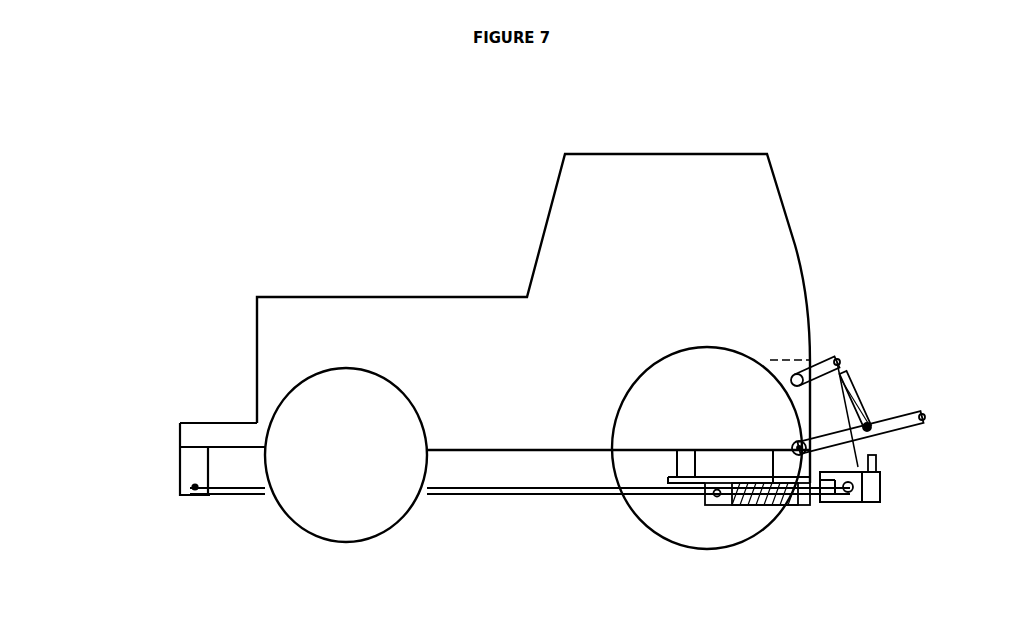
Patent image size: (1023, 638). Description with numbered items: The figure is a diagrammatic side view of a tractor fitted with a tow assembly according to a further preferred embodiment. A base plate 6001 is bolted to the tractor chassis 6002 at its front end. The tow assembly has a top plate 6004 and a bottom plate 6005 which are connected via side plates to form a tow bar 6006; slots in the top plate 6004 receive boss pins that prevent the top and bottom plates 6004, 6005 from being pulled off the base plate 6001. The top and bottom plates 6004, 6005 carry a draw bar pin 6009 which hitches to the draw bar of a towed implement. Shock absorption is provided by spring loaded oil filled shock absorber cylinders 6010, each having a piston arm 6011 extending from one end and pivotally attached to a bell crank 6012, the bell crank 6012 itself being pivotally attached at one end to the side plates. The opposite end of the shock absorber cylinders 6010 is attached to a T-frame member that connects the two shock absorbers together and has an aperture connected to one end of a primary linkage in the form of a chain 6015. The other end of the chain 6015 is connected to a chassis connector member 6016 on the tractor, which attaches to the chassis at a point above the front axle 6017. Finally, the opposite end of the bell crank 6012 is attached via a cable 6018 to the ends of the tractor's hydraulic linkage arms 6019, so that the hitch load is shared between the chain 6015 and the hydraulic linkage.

The base plate 6001 is at (887, 500).
The tractor chassis 6002 is at (748, 465).
The top plate 6004 is at (885, 480).
The bottom plate 6005 is at (870, 505).
The tow bar 6006 is at (877, 465).
The draw bar pin 6009 is at (920, 428).
The shock absorber cylinder 6010 is at (758, 495).
The piston arm 6011 is at (820, 503).
The bell crank 6012 is at (835, 503).
The chain 6015 is at (543, 495).
The chassis connector member 6016 is at (193, 463).
The front axle 6017 is at (343, 453).
The cable 6018 is at (857, 377).
The hydraulic linkage arm 6019 is at (825, 358).